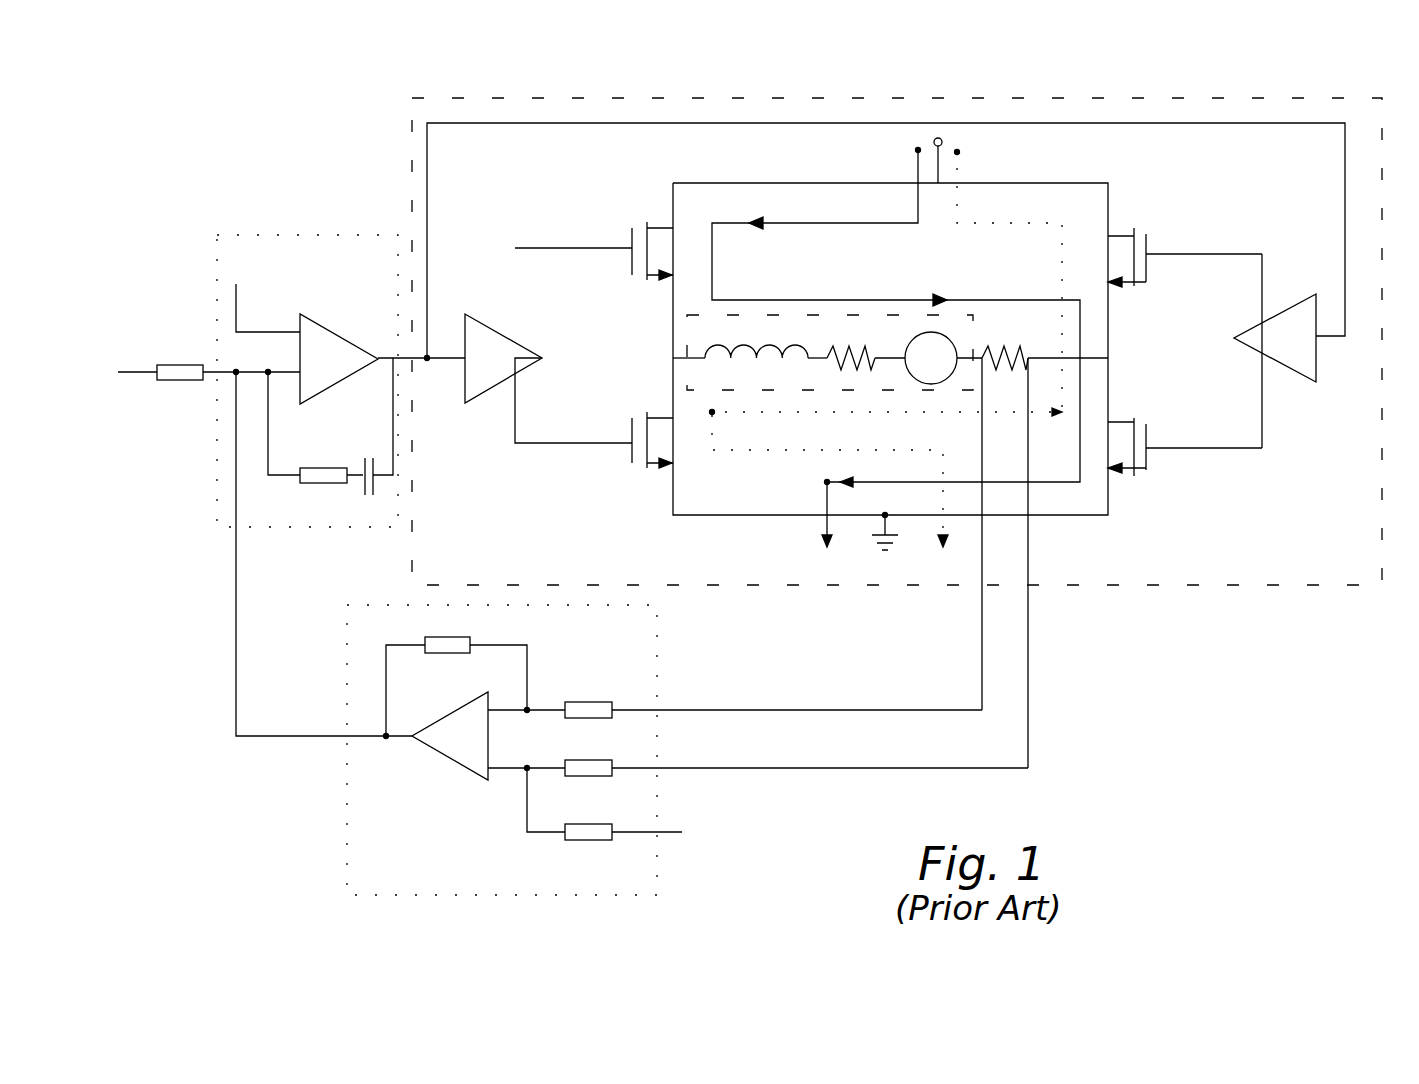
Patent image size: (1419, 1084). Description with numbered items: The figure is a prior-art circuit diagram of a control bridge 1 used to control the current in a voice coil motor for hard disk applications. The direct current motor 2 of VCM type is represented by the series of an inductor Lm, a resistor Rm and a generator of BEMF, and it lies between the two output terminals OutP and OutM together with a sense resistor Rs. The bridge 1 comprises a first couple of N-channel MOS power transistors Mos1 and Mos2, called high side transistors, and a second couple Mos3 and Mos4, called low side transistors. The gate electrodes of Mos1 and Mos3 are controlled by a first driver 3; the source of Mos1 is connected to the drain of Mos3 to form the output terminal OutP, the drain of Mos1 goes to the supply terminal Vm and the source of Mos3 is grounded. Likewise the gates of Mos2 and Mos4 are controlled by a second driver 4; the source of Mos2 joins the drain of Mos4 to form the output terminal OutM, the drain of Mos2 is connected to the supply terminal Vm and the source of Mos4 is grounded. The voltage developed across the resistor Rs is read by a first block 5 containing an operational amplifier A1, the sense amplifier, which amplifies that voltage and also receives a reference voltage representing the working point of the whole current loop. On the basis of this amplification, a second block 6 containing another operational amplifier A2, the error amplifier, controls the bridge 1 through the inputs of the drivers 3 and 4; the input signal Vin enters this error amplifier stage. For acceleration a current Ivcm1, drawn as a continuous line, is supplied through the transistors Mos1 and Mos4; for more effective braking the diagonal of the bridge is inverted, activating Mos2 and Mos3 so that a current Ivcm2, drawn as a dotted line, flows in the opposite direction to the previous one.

The control bridge 1 is at (1220, 585).
The direct current motor 2 is at (975, 334).
The first driver 3 is at (486, 369).
The second driver 4 is at (1291, 353).
The first block 5 is at (345, 828).
The second block 6 is at (236, 235).
The high side power transistor Mos1 is at (620, 232).
The high side power transistor Mos2 is at (1157, 231).
The low side power transistor Mos3 is at (622, 460).
The low side power transistor Mos4 is at (1158, 472).
The sense amplifier A1 is at (442, 757).
The error amplifier A2 is at (328, 327).
The inductor Lm is at (735, 362).
The resistor Rm is at (843, 348).
The resistor Rs is at (1012, 348).
The generator of BEMF is at (931, 358).
The supply terminal Vm is at (943, 141).
The input voltage Vin is at (132, 370).
The current Ivcm1 is at (896, 348).
The current Ivcm2 is at (886, 349).
The output terminal OutP is at (673, 358).
The output terminal OutM is at (1108, 358).